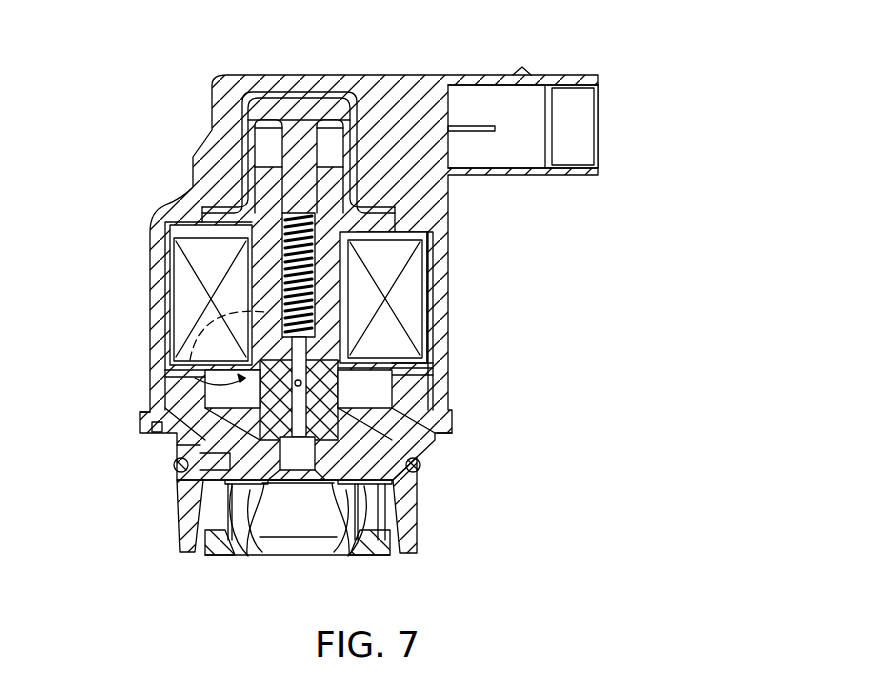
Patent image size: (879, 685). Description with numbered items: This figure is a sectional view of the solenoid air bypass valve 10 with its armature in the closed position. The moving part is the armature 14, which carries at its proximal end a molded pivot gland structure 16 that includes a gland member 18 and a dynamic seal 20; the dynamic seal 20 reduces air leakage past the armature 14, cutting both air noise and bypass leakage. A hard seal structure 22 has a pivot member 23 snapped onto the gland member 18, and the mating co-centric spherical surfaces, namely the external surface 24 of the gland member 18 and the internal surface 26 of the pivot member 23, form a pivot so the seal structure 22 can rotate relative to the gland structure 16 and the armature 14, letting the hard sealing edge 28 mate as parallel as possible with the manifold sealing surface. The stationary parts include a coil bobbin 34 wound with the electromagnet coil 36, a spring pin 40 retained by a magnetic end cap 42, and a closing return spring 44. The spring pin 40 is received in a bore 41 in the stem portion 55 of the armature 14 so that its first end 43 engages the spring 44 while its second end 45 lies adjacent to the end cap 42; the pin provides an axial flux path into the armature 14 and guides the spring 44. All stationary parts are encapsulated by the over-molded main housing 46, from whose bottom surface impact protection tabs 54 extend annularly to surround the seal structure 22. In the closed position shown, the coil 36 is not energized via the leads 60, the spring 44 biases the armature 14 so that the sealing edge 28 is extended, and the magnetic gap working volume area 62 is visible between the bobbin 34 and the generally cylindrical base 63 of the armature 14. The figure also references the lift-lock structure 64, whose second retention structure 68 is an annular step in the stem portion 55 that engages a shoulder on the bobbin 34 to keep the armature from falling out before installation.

The valve 10 is at (494, 50).
The armature 14 is at (417, 332).
The pivot gland structure 16 is at (222, 458).
The gland member 18 is at (250, 556).
The dynamic seal 20 is at (412, 443).
The hard seal structure 22 is at (349, 556).
The pivot member 23 is at (190, 536).
The external surface 24 is at (207, 553).
The internal surface 26 is at (330, 532).
The hard sealing edge 28 is at (377, 556).
The coil bobbin 34 is at (403, 356).
The electromagnet coil 36 is at (415, 292).
The spring pin 40 is at (288, 140).
The bore 41 is at (352, 250).
The end cap 42 is at (250, 87).
The first end 43 is at (240, 243).
The closing return spring 44 is at (252, 325).
The second end 45 is at (335, 93).
The main housing 46 is at (200, 166).
The tabs 54 is at (410, 530).
The stem portion 55 is at (280, 268).
The leads 60 is at (495, 129).
The magnetic gap working volume area 62 is at (412, 377).
The base 63 is at (430, 417).
The lift-lock structure 64 is at (203, 373).
The second retention structure 68 is at (348, 337).